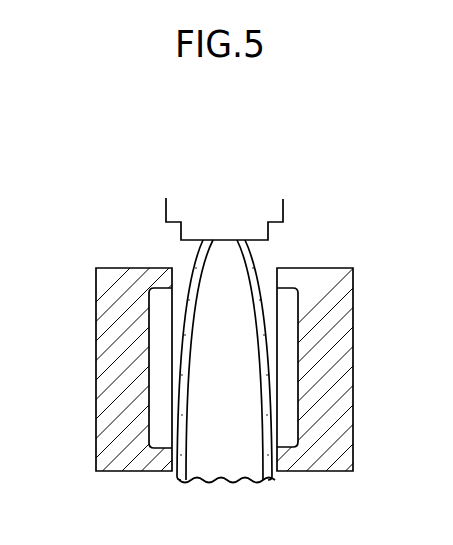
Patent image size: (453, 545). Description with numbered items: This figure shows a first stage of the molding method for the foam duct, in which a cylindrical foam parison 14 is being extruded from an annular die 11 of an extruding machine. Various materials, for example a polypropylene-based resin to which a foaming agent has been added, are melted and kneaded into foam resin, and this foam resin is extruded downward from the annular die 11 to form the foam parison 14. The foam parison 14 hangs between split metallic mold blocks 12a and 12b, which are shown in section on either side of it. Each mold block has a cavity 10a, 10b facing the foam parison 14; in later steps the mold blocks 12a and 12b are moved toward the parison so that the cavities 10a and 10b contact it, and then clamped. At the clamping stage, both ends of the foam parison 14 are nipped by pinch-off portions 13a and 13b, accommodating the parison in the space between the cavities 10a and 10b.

The cavity 10a is at (156, 360).
The cavity 10b is at (297, 362).
The annular die 11 is at (178, 208).
The split metallic mold block 12a is at (122, 437).
The split metallic mold block 12b is at (338, 278).
The pinch-off portion 13a is at (175, 278).
The pinch-off portion 13b is at (275, 276).
The foam parison 14 is at (272, 478).